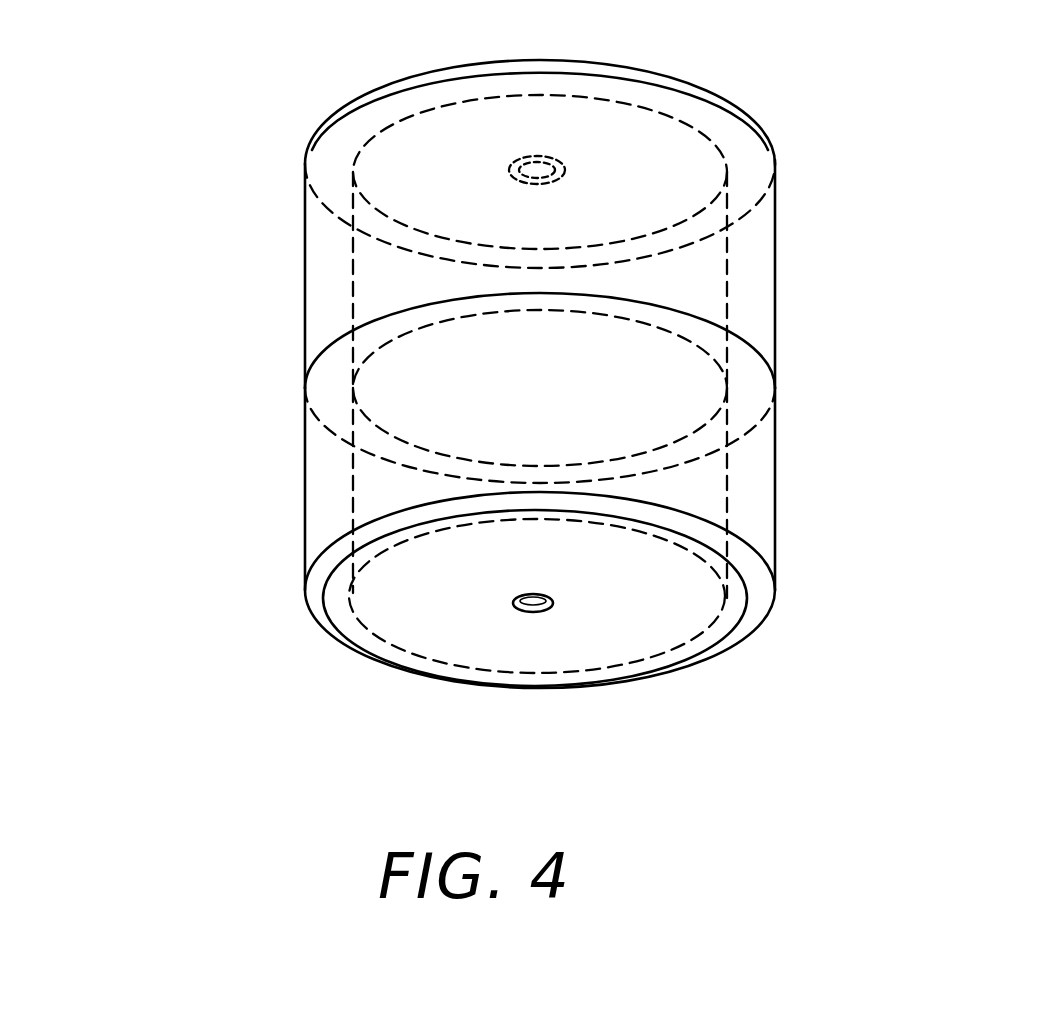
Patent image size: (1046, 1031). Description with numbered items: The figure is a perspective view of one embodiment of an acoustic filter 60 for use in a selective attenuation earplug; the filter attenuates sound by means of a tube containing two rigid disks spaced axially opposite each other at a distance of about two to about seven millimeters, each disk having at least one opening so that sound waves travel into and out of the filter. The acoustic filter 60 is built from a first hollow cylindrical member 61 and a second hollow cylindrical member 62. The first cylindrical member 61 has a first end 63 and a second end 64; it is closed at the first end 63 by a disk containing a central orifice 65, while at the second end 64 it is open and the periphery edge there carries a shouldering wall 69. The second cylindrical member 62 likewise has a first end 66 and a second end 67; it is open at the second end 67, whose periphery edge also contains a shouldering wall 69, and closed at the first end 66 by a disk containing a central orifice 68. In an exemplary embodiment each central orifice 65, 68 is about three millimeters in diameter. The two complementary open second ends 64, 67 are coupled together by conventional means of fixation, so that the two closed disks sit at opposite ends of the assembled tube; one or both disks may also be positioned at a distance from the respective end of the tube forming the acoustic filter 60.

The acoustic filter 60 is at (168, 436).
The first hollow cylindrical member 61 is at (790, 252).
The second hollow cylindrical member 62 is at (790, 510).
The first end 63 is at (777, 158).
The second end 64 is at (305, 381).
The central orifice 65 is at (562, 153).
The first end 66 is at (757, 628).
The second end 67 is at (777, 391).
The central orifice 68 is at (540, 611).
The shouldering wall 69 is at (778, 440).